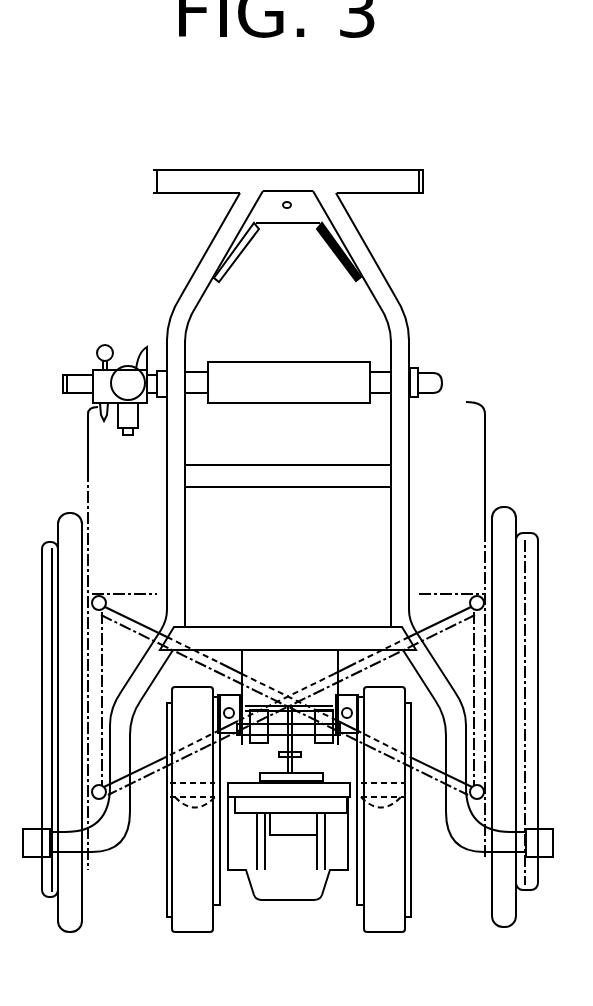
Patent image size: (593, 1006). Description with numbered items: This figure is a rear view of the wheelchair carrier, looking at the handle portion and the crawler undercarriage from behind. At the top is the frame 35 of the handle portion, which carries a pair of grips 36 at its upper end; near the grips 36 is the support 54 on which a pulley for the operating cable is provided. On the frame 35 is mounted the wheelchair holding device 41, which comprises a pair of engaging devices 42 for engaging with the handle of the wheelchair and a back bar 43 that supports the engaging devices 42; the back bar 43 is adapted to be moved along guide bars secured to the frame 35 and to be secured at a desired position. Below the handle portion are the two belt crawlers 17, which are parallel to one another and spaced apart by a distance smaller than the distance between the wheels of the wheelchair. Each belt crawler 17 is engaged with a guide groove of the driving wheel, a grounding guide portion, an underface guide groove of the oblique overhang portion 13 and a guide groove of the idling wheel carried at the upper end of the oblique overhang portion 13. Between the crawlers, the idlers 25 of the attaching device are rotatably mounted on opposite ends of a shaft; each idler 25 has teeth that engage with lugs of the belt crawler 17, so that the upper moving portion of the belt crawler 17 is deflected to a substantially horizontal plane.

The grip 36 is at (400, 192).
The wheelchair holding device 41 is at (158, 268).
The support 54 is at (297, 222).
The engaging device 42 is at (126, 346).
The back bar 43 is at (234, 362).
The frame 35 is at (168, 525).
The idler 25 is at (170, 798).
The oblique overhang portion 13 is at (167, 868).
The belt crawler 17 is at (187, 898).